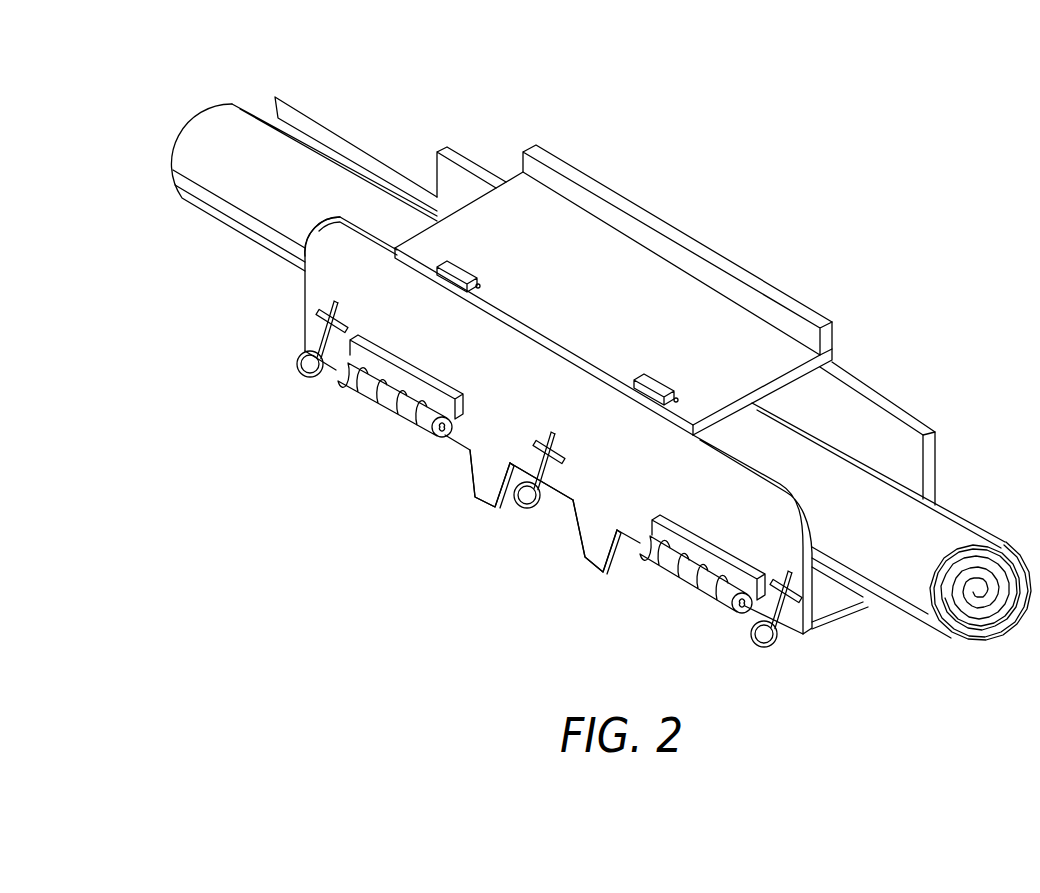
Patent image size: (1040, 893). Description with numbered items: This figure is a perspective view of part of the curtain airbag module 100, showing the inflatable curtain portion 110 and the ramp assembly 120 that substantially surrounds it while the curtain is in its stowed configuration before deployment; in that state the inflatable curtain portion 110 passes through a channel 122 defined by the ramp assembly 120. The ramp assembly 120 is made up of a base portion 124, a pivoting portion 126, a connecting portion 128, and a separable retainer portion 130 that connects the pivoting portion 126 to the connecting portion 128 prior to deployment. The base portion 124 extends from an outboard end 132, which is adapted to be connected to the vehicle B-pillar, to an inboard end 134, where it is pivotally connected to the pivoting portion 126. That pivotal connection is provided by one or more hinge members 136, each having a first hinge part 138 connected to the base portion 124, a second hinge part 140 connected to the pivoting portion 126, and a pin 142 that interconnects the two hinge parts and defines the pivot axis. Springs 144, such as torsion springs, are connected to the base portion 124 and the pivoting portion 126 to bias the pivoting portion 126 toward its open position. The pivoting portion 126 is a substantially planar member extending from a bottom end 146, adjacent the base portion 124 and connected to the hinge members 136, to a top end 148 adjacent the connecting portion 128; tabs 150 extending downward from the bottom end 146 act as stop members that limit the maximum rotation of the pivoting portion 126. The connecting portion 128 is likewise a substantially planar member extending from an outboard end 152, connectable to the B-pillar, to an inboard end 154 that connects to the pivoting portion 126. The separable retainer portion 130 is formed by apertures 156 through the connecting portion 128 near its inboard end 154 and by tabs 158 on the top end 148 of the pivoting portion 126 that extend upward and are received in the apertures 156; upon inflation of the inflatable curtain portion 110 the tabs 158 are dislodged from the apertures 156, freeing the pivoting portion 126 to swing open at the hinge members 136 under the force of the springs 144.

The curtain airbag module 100 is at (775, 98).
The inflatable curtain portion 110 is at (169, 108).
The ramp assembly 120 is at (734, 398).
The channel 122 is at (870, 421).
The base portion 124 is at (862, 607).
The pivoting portion 126 is at (542, 431).
The connecting portion 128 is at (610, 286).
The separable retainer portion 130 is at (580, 315).
The outboard end 132 is at (937, 459).
The inboard end 134 is at (816, 630).
The hinge member 136 is at (526, 486).
The first hinge part 138 is at (446, 438).
The second hinge part 140 is at (411, 364).
The pin 142 is at (437, 431).
The spring 144 is at (300, 376).
The bottom end 146 is at (557, 494).
The top end 148 is at (360, 222).
The tab 150 is at (477, 503).
The outboard end 152 is at (553, 157).
The inboard end 154 is at (413, 268).
The aperture 156 is at (479, 285).
The tab 158 is at (467, 264).